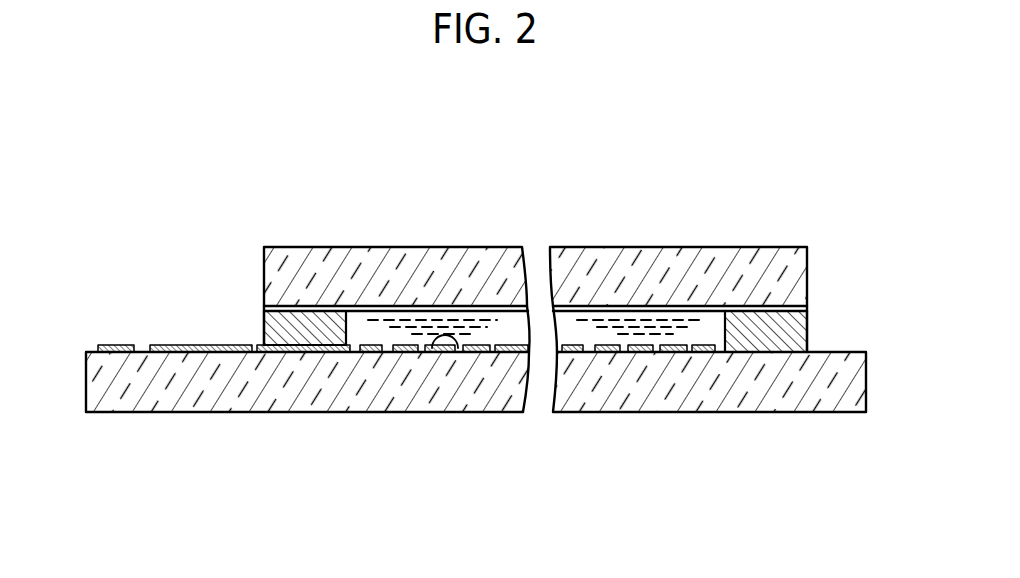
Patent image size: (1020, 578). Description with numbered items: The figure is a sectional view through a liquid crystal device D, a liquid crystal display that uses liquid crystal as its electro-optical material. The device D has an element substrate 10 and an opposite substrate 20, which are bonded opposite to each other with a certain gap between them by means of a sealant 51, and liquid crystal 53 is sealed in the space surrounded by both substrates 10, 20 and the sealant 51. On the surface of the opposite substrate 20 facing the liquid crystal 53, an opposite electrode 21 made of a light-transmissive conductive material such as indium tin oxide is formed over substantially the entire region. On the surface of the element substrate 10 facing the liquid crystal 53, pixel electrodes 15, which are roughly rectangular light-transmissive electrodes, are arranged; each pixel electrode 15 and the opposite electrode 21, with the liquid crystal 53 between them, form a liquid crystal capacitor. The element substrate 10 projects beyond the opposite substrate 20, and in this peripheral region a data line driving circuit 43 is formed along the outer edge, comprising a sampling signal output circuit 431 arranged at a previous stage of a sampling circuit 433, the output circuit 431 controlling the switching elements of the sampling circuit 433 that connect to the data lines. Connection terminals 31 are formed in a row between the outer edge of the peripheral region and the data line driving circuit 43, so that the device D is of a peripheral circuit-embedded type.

The element substrate 10 is at (320, 413).
The pixel electrode 15 is at (453, 348).
The opposite substrate 20 is at (345, 247).
The opposite electrode 21 is at (467, 308).
The connection terminals 31 is at (114, 346).
The data line driving circuit 43 is at (230, 302).
The sampling signal output circuit 431 is at (169, 346).
The sampling circuit 433 is at (261, 346).
The sealant 51 is at (266, 315).
The liquid crystal 53 is at (502, 328).
The liquid crystal device D is at (578, 171).